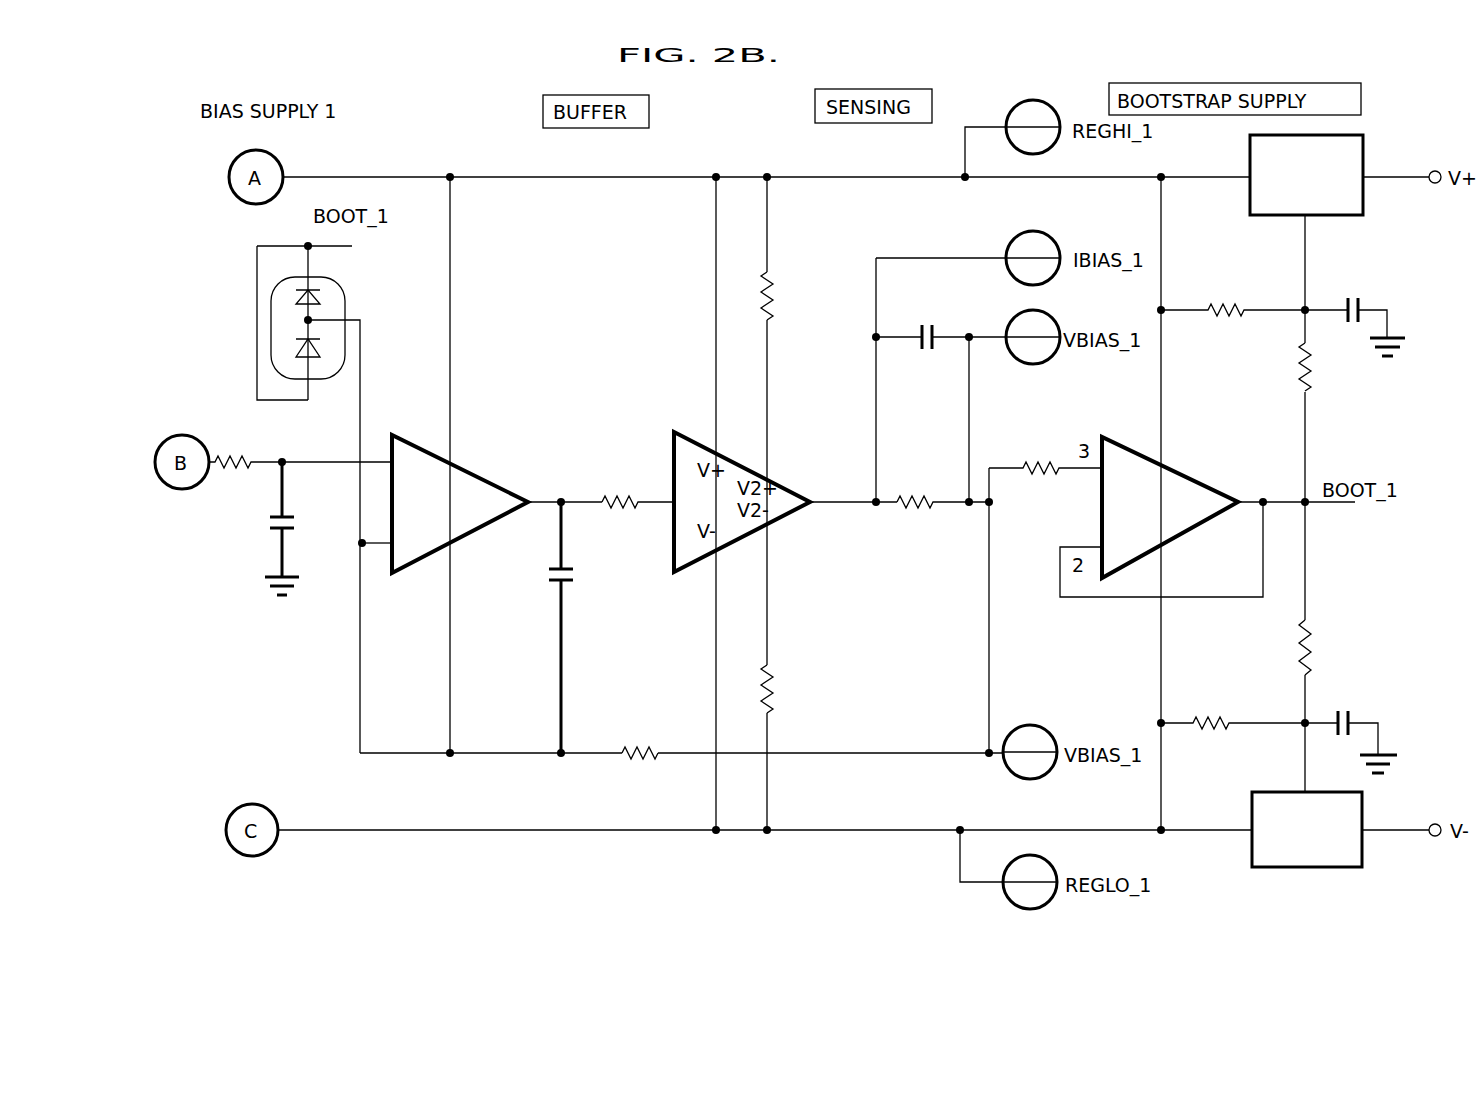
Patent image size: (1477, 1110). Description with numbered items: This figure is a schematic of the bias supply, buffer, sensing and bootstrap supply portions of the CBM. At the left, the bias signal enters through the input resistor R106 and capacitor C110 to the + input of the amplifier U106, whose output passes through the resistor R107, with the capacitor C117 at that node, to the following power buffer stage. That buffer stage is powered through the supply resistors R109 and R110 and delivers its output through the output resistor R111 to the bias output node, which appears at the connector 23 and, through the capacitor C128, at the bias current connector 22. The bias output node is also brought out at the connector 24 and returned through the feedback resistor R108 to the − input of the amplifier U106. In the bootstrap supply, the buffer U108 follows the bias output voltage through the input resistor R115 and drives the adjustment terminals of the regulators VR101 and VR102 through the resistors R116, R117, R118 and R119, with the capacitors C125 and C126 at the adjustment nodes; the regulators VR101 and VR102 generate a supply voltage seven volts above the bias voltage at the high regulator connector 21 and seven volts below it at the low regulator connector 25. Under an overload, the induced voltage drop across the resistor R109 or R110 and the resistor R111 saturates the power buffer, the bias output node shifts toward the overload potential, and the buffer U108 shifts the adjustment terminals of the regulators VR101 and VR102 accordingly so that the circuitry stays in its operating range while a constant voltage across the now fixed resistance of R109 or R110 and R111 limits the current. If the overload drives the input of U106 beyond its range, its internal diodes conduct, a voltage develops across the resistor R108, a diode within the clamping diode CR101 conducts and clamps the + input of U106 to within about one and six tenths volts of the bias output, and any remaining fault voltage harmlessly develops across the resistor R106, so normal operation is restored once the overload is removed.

The clamping diode CR101 is at (334, 507).
The input resistor R106 is at (300, 444).
The capacitor C110 is at (252, 528).
The buffer amplifier U106 is at (450, 487).
The resistor R107 is at (630, 484).
The capacitor C117 is at (588, 627).
The supply resistor R109 is at (797, 296).
The supply resistor R110 is at (796, 689).
The feedback resistor R108 is at (637, 739).
The output resistor R111 is at (941, 516).
The capacitor C128 is at (941, 320).
The input resistor R115 is at (1045, 454).
The buffer U108 is at (1155, 489).
The REGHI_1 connector 21 is at (1033, 127).
The IBIAS_1 connector 22 is at (1033, 258).
The VBIAS_1 connector 23 is at (1033, 337).
The VBIAS_1 connector 24 is at (1030, 752).
The REGLO_1 connector 25 is at (1030, 882).
The regulator VR101 is at (1347, 167).
The resistor R116 is at (1233, 295).
The capacitor C125 is at (1355, 311).
The resistor R117 is at (1271, 367).
The resistor R118 is at (1271, 647).
The resistor R119 is at (1233, 709).
The capacitor C126 is at (1351, 729).
The regulator VR102 is at (1323, 815).